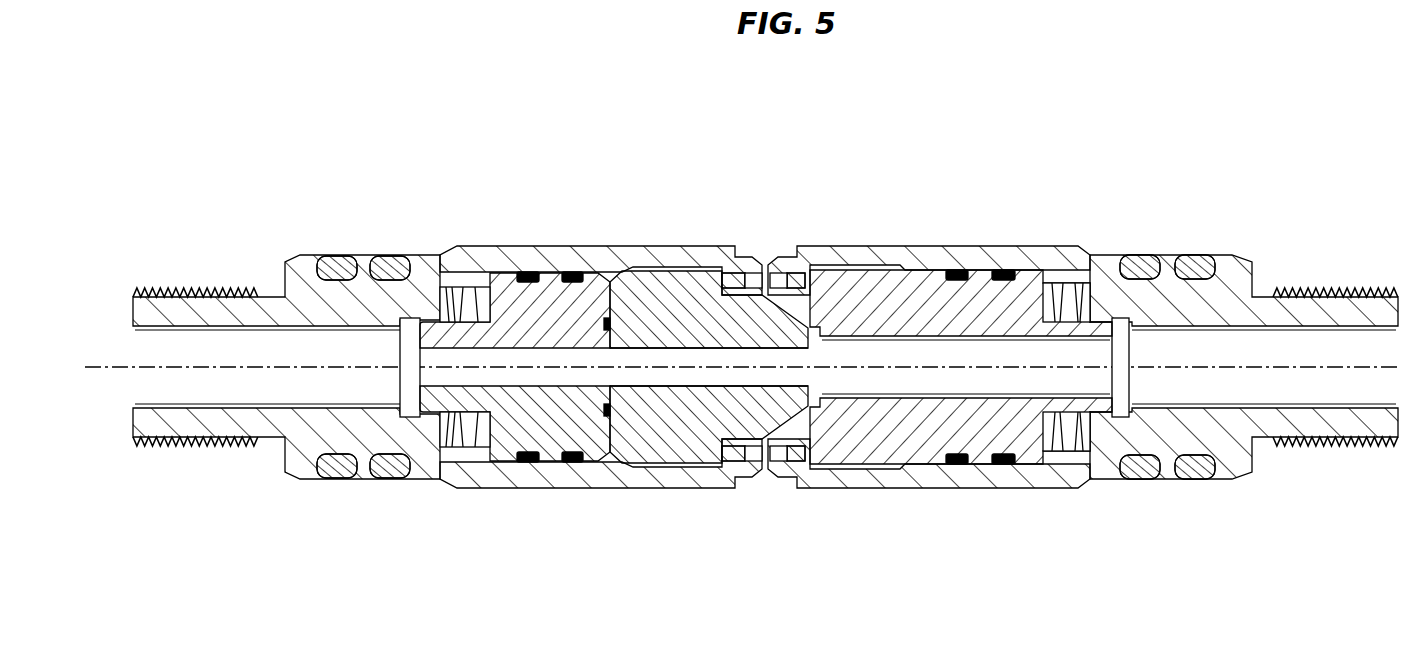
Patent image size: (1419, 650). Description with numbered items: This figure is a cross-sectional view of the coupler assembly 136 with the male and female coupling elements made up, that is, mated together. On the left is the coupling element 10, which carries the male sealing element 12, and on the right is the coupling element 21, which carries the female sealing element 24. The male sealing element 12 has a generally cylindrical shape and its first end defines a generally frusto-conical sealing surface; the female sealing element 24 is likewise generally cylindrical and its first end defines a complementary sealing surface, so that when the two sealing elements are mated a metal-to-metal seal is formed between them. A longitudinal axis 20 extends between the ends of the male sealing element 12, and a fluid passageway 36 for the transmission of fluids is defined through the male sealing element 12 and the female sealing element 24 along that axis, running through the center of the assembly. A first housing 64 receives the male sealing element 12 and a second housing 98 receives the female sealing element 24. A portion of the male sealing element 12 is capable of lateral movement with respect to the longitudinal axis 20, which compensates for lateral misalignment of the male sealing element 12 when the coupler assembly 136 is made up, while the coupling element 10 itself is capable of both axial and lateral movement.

The coupler assembly 136 is at (489, 158).
The coupling element 10 is at (486, 530).
The coupling element 21 is at (975, 530).
The male sealing element 12 is at (653, 290).
The female sealing element 24 is at (868, 288).
The fluid passageway 36 is at (667, 382).
The first housing 64 is at (555, 246).
The second housing 98 is at (997, 246).
The longitudinal axis 20 is at (110, 367).